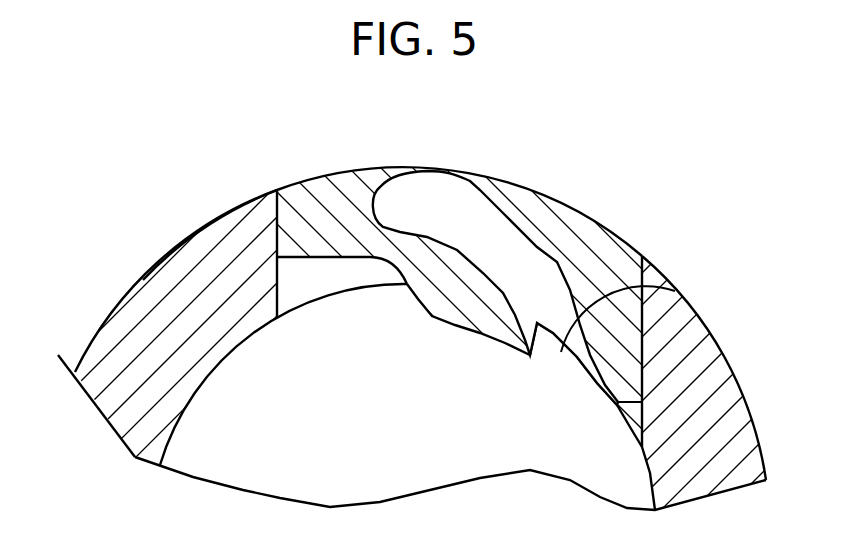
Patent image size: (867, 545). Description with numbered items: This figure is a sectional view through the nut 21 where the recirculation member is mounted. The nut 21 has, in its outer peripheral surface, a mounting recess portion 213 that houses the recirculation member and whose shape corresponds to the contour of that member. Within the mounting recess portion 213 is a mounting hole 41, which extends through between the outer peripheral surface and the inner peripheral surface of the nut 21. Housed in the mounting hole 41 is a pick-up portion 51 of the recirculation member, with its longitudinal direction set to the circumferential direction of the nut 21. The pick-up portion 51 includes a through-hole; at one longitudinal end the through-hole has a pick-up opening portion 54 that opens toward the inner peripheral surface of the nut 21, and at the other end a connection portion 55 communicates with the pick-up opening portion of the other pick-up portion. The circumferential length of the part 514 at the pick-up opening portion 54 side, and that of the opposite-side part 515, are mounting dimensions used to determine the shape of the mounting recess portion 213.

The nut 21 is at (140, 343).
The mounting recess portion 213 is at (276, 262).
The mounting hole 41 is at (383, 310).
The pick-up portion 51 is at (510, 310).
The pick-up opening portion-side part 514 is at (637, 265).
The opposite-side part 515 is at (290, 200).
The pick-up opening portion 54 is at (672, 290).
The connection portion 55 is at (390, 200).